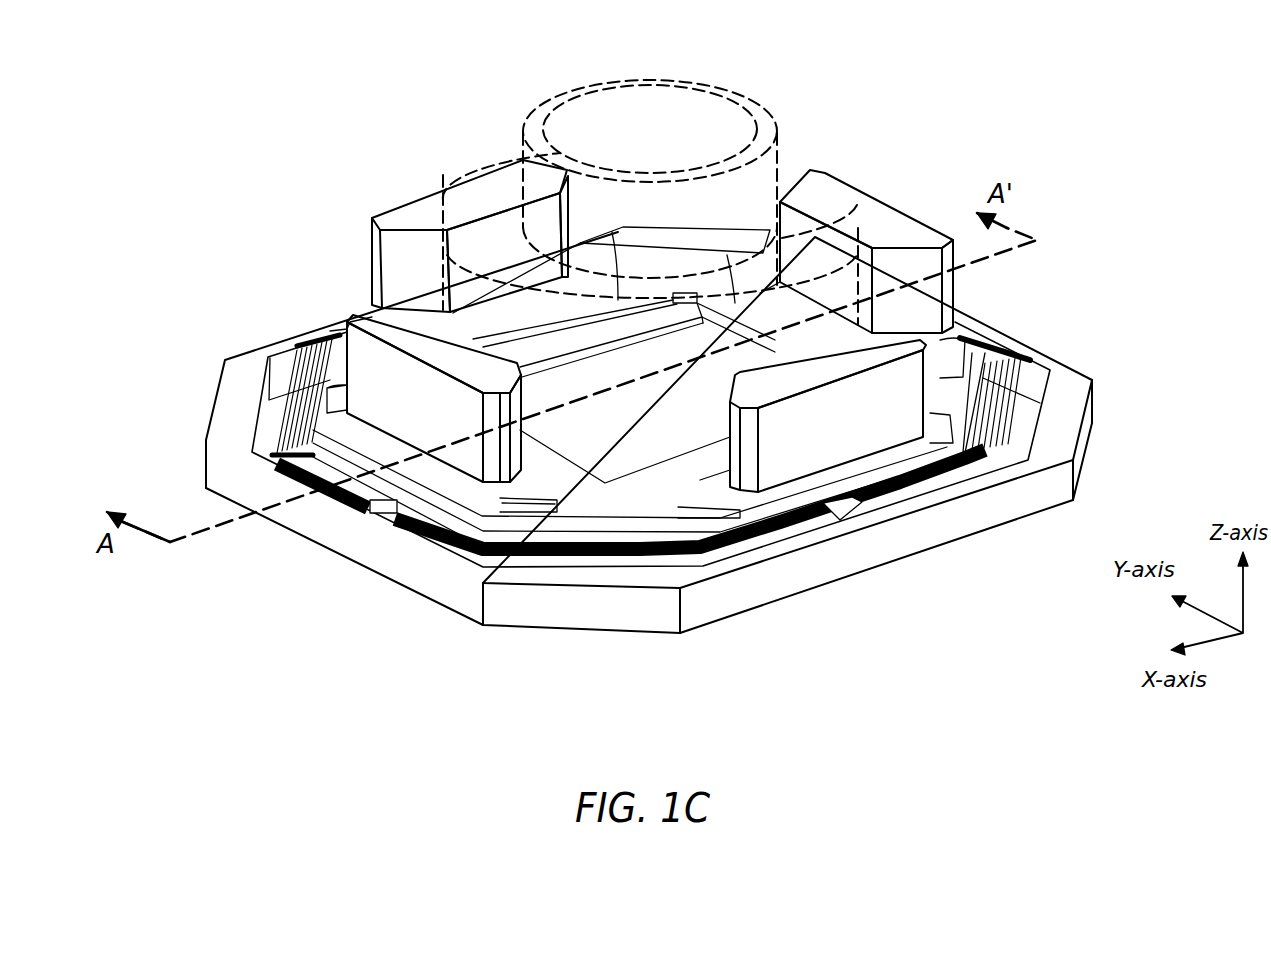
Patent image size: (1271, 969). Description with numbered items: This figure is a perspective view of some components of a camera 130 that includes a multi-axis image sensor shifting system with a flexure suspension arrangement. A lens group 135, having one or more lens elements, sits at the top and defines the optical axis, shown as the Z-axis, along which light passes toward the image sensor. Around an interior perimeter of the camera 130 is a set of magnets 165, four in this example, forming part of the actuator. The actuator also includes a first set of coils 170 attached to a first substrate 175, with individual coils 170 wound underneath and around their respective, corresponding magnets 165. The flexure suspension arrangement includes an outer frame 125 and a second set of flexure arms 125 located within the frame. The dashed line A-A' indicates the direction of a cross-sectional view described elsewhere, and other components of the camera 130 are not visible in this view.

The camera 130 is at (788, 38).
The lens group 135 is at (589, 89).
The magnets 165 is at (852, 433).
The outer frame 125 is at (433, 537).
The first set of coils 170 is at (537, 490).
The first substrate 175 is at (625, 513).